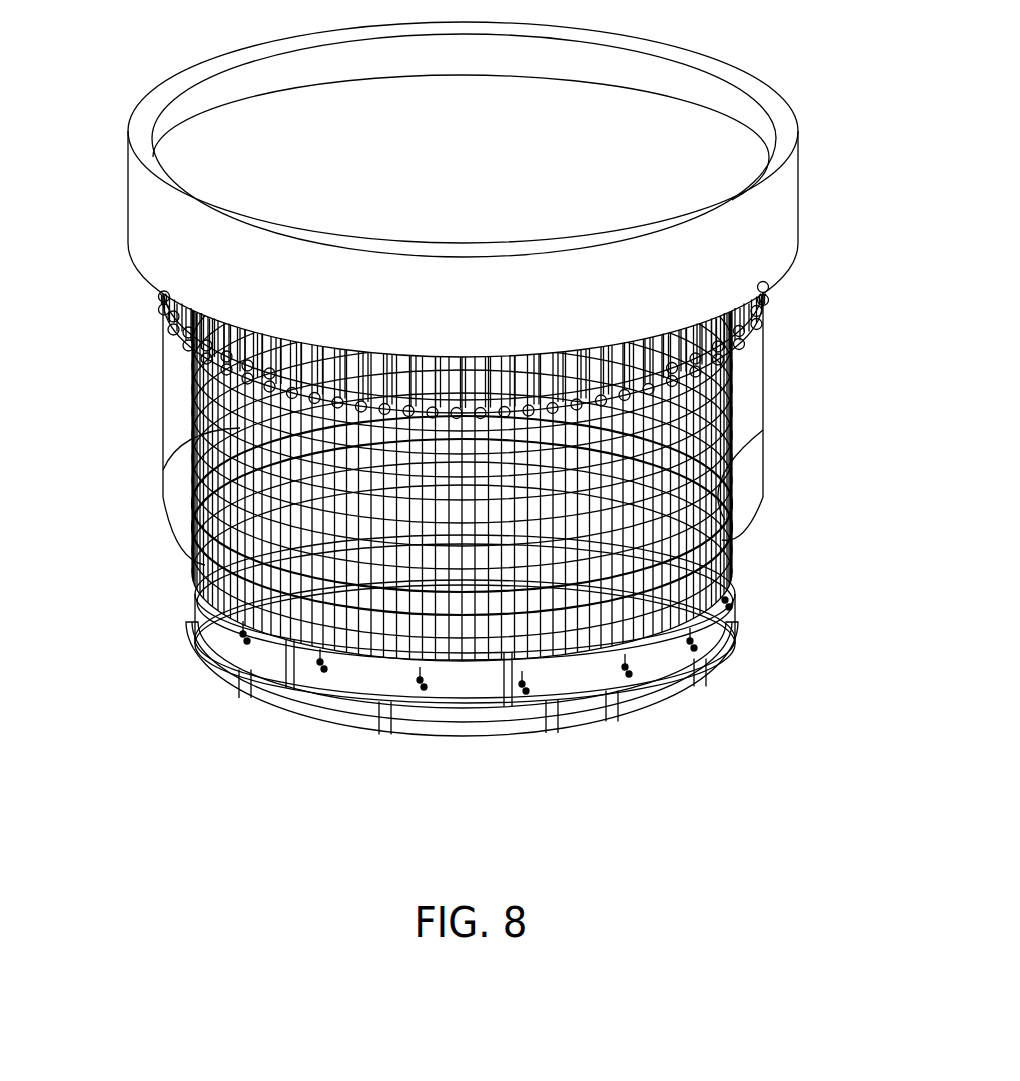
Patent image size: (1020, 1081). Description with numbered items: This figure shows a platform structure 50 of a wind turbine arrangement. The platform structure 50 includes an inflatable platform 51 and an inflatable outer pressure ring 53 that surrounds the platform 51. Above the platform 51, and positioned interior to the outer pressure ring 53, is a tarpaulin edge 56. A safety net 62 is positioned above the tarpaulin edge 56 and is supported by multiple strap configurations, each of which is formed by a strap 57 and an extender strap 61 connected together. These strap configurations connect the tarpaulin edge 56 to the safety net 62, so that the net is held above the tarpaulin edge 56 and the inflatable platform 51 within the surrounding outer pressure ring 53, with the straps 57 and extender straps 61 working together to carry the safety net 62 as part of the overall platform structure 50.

The platform structure 50 is at (523, 700).
The inflatable platform 51 is at (355, 703).
The inflatable outer pressure ring 53 is at (465, 724).
The tarpaulin edge 56 is at (563, 637).
The strap 57 is at (640, 717).
The extender strap 61 is at (636, 341).
The safety net 62 is at (203, 562).